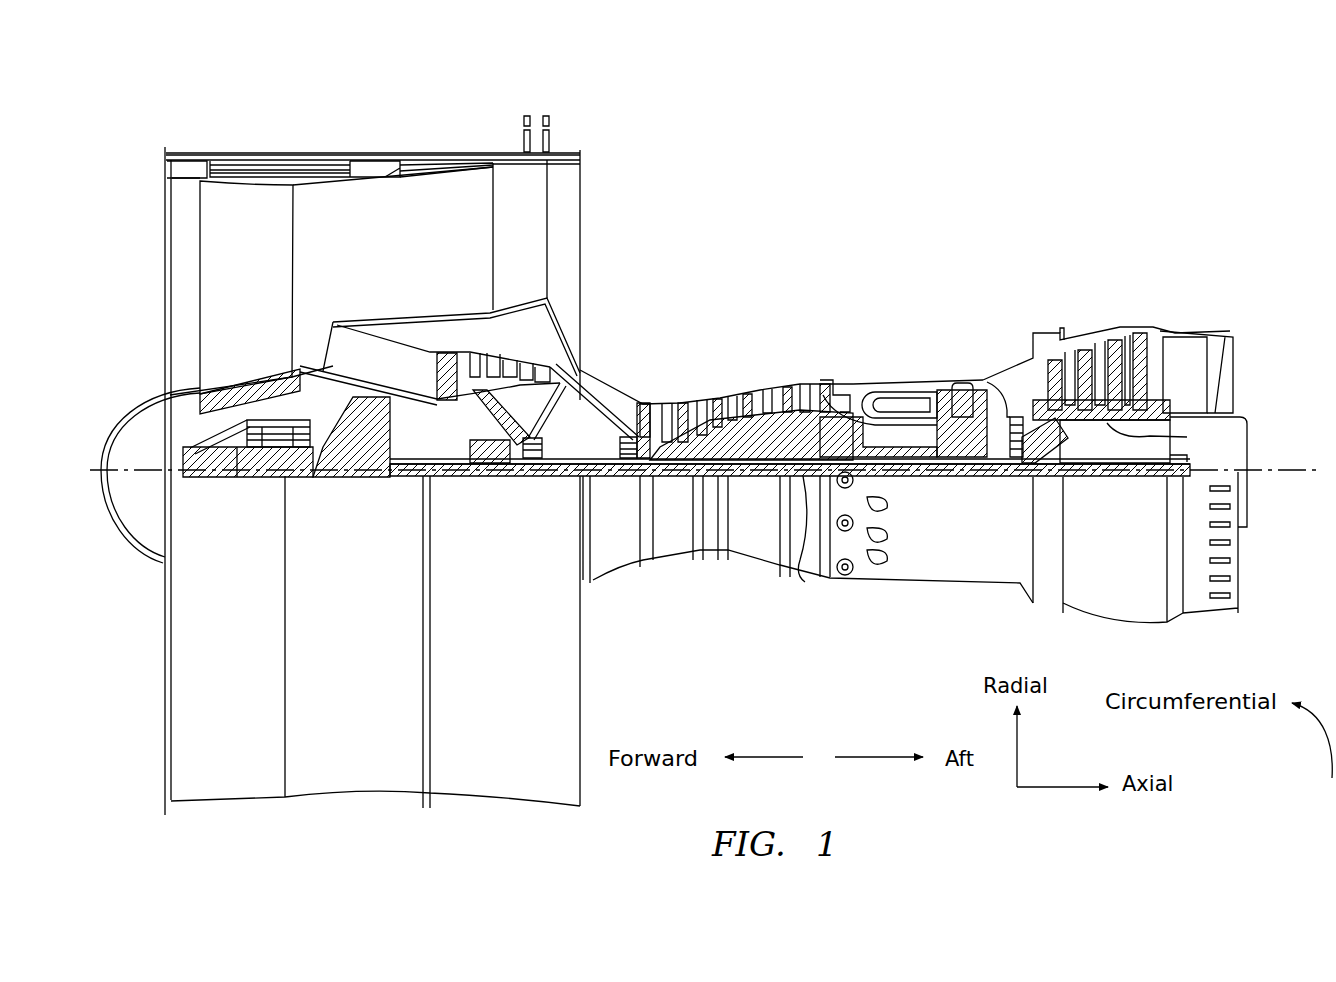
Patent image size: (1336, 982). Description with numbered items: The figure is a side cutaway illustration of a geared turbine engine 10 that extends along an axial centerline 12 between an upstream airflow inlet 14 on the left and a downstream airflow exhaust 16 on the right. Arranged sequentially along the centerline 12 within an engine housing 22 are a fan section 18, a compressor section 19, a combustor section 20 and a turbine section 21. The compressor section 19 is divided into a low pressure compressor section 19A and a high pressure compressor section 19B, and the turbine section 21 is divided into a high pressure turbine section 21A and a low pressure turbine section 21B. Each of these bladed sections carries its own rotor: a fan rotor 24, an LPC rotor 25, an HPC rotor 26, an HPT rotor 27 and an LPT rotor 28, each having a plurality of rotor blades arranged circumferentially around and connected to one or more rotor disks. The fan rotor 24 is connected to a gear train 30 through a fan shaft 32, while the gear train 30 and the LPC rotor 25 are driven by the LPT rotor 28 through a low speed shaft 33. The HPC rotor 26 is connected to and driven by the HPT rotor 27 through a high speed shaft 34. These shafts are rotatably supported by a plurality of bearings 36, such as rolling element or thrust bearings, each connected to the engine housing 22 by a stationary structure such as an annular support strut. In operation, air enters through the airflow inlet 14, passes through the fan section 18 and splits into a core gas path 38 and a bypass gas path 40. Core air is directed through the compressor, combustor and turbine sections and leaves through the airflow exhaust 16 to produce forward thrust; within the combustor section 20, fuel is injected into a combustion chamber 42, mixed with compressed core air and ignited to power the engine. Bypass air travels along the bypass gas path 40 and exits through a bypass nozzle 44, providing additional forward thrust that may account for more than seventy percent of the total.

The geared turbine engine 10 is at (128, 128).
The axial centerline 12 is at (1296, 490).
The airflow inlet 14 is at (165, 228).
The airflow exhaust 16 is at (1238, 380).
The fan section 18 is at (338, 130).
The compressor section 19 is at (415, 64).
The low pressure compressor (LPC) section 19A is at (580, 115).
The high pressure compressor (HPC) section 19B is at (610, 305).
The combustor section 20 is at (930, 305).
The turbine section 21 is at (935, 235).
The high pressure turbine (HPT) section 21A is at (1010, 305).
The low pressure turbine (LPT) section 21B is at (1195, 305).
The engine housing 22 is at (604, 590).
The fan rotor 24 is at (178, 395).
The LPC rotor 25 is at (488, 428).
The HPC rotor 26 is at (760, 443).
The HPT rotor 27 is at (958, 478).
The LPT rotor 28 is at (1162, 439).
The gear train 30 is at (373, 478).
The fan shaft 32 is at (238, 478).
The low speed shaft 33 is at (808, 583).
The high speed shaft 34 is at (877, 478).
The bearings 36 is at (298, 448).
The core gas path 38 is at (603, 402).
The bypass gas path 40 is at (398, 246).
The combustion chamber 42 is at (888, 405).
The bypass nozzle 44 is at (582, 208).